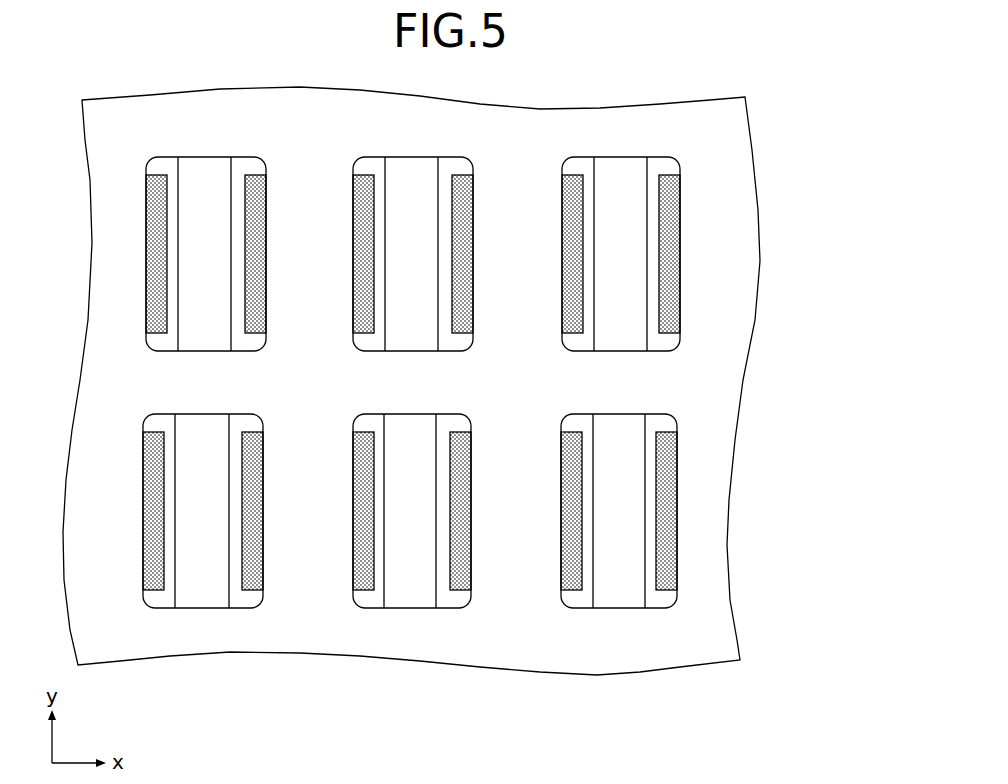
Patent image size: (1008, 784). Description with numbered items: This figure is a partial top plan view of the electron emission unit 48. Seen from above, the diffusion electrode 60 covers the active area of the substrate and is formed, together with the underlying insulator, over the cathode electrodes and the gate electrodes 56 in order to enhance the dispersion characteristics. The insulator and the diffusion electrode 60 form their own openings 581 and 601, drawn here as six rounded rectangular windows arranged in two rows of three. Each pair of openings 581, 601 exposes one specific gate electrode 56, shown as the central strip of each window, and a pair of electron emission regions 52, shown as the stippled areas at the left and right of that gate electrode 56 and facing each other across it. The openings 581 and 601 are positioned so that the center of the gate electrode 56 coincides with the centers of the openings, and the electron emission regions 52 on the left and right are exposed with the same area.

The electron emission unit 48 is at (435, 381).
The diffusion electrode 60 is at (722, 380).
The opening of the insulator 581 is at (763, 254).
The opening of the diffusion electrode 601 is at (672, 244).
The gate electrode 56 is at (410, 586).
The electron emission region 52 is at (670, 580).